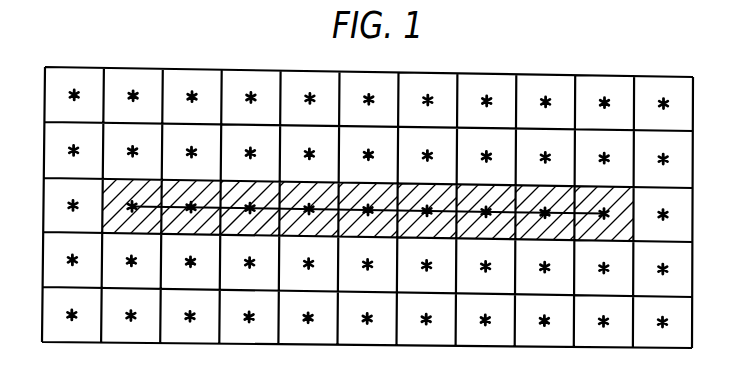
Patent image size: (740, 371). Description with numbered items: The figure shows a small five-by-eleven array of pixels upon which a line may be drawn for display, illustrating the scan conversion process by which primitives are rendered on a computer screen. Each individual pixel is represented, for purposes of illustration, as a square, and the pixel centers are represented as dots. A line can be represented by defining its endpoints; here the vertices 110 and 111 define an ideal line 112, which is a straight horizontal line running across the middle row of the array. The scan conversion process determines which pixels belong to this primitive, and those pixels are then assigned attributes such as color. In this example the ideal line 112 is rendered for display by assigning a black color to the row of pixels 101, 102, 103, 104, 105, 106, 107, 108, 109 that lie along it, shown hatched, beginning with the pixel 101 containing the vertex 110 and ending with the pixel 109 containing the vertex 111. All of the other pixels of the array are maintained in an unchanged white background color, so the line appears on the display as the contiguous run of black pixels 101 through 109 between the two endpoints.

The pixel 101 is at (148, 176).
The pixel 102 is at (207, 177).
The pixel 103 is at (266, 178).
The pixel 104 is at (325, 179).
The pixel 105 is at (384, 180).
The pixel 106 is at (443, 181).
The pixel 107 is at (502, 182).
The pixel 108 is at (561, 183).
The pixel 109 is at (620, 184).
The vertex 110 is at (132, 208).
The vertex 111 is at (604, 215).
The ideal line 112 is at (240, 209).